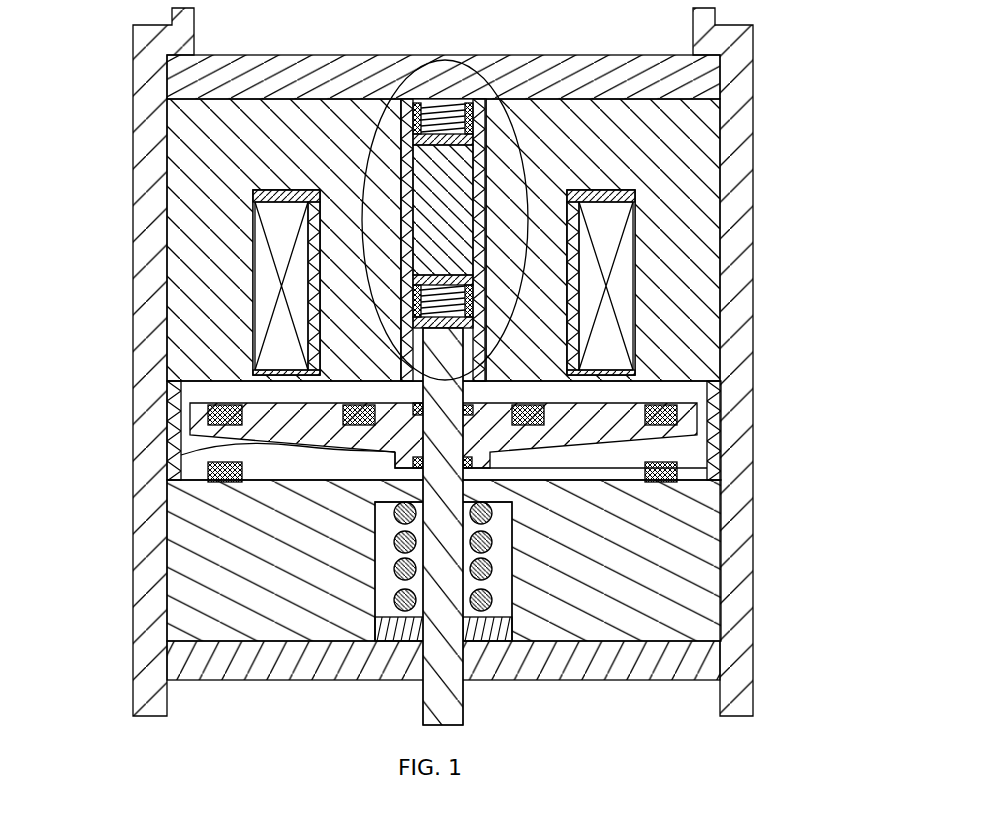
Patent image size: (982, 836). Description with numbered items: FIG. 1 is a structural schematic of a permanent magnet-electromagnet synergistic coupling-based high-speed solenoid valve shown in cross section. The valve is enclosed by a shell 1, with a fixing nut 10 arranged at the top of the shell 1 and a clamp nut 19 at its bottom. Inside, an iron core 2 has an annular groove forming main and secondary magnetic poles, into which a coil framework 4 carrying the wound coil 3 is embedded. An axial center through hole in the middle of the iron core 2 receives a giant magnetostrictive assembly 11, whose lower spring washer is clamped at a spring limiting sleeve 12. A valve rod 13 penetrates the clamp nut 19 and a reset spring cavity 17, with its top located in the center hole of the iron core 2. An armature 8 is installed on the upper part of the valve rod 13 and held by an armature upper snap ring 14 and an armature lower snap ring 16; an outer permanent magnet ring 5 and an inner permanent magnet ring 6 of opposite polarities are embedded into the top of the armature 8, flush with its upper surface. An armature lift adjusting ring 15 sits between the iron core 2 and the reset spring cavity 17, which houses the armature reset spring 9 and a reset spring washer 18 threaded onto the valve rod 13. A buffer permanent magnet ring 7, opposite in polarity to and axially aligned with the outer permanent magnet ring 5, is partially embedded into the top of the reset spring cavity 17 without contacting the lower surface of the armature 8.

The shell 1 is at (153, 100).
The iron core 2 is at (232, 182).
The coil 3 is at (260, 260).
The coil framework 4 is at (308, 298).
The outer permanent magnet ring 5 is at (353, 410).
The inner permanent magnet ring 6 is at (183, 453).
The buffer permanent magnet ring 7 is at (395, 450).
The armature 8 is at (415, 425).
The armature reset spring 9 is at (397, 543).
The fixing nut 10 is at (683, 85).
The giant magnetostrictive assembly 11 is at (538, 200).
The spring limiting sleeve 12 is at (445, 388).
The valve rod 13 is at (398, 402).
The armature upper snap ring 14 is at (468, 406).
The armature lift adjusting ring 15 is at (713, 425).
The armature lower snap ring 16 is at (678, 478).
The reset spring cavity 17 is at (507, 570).
The reset spring washer 18 is at (505, 630).
The clamp nut 19 is at (675, 667).